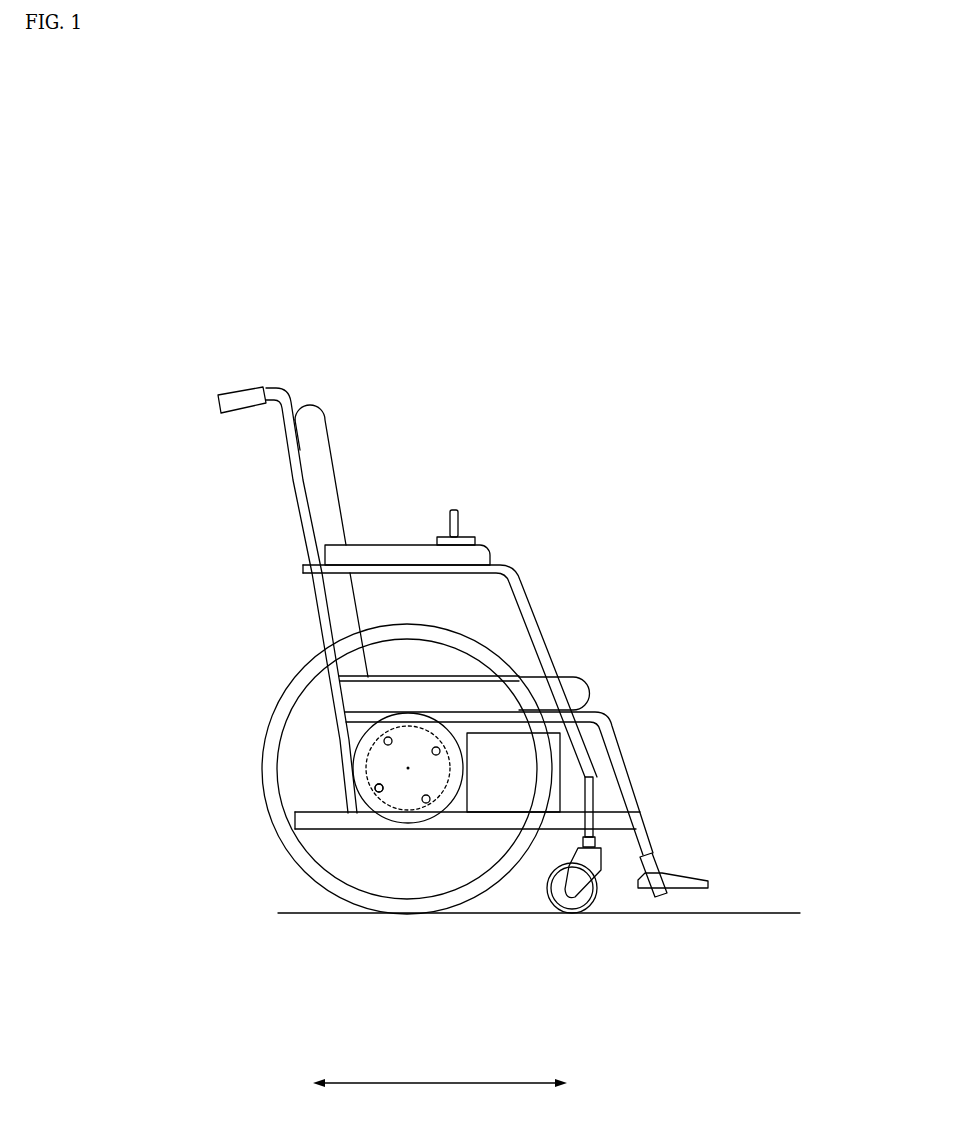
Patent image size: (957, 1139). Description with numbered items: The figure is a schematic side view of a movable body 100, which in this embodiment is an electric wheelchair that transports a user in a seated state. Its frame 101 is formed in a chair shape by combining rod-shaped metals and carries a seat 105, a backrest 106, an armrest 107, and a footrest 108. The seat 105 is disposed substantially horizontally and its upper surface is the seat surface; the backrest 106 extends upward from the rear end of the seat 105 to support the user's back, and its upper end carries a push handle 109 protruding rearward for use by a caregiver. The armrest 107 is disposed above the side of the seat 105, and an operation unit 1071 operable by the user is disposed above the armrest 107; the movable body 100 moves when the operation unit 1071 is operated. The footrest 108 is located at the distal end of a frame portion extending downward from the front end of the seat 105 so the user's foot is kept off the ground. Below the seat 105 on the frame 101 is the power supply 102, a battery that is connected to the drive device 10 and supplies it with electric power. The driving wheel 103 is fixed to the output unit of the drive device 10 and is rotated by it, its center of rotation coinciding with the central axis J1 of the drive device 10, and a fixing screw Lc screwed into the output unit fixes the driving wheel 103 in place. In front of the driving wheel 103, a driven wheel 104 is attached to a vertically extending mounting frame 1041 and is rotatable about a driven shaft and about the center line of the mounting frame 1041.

The movable body 100 is at (407, 278).
The frame 101 is at (310, 612).
The power supply 102 is at (497, 797).
The driving wheel 103 is at (268, 753).
The driven wheel 104 is at (579, 902).
The mounting frame 1041 is at (590, 805).
The seat 105 is at (578, 688).
The backrest 106 is at (327, 513).
The armrest 107 is at (473, 553).
The operation unit 1071 is at (455, 510).
The footrest 108 is at (677, 873).
The push handle 109 is at (235, 392).
The drive device 10 is at (398, 810).
The central axis J1 is at (398, 771).
The fixing screw Lc is at (377, 790).